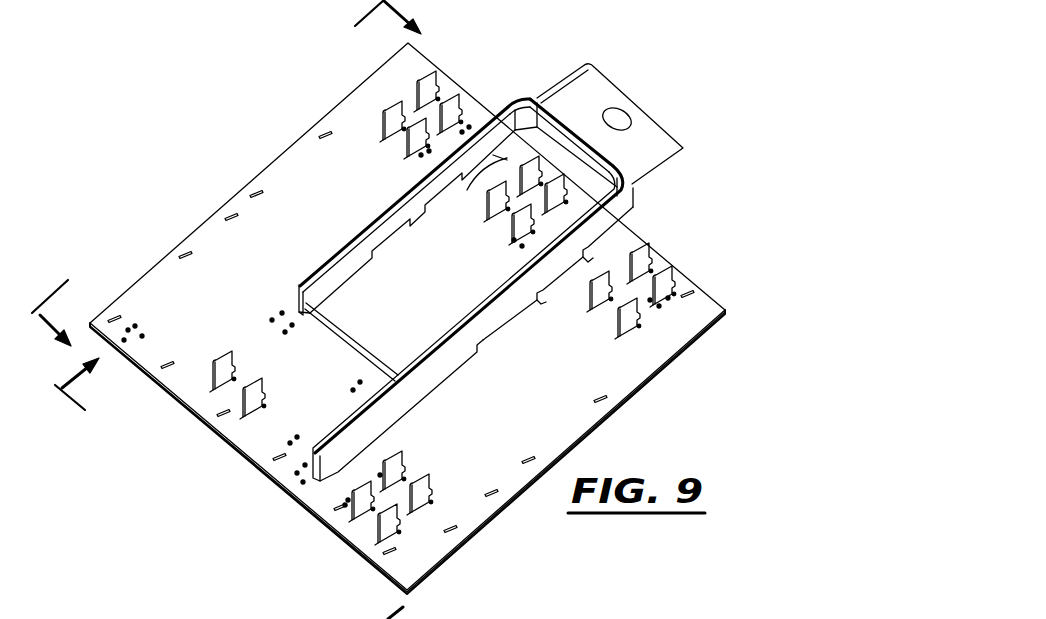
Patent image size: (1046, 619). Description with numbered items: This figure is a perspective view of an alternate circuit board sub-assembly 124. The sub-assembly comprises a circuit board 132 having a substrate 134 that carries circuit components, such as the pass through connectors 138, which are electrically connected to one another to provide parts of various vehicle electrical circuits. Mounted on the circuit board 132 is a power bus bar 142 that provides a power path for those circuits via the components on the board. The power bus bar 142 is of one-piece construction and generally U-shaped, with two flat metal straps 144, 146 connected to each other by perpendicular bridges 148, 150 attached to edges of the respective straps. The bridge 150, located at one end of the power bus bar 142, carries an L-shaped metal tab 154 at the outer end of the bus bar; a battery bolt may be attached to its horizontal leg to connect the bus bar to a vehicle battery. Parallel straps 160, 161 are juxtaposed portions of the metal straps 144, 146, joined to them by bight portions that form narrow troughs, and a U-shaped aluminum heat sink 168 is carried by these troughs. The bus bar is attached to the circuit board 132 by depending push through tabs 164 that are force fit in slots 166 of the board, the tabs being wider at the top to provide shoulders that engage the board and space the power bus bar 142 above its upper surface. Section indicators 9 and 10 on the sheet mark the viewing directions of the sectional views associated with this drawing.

The circuit board sub-assembly 124 is at (573, 315).
The circuit board 132 is at (469, 318).
The substrate 134 is at (722, 318).
The pass through connectors 138 is at (672, 277).
The power bus bar 142 is at (624, 116).
The flat metal strap 144 is at (497, 320).
The flat metal strap 146 is at (310, 275).
The bridge 148 is at (378, 354).
The bridge 150 is at (500, 157).
The L-shaped metal tab 154 is at (598, 90).
The parallel strap 160 is at (440, 347).
The parallel strap 161 is at (406, 224).
The push through tabs 164 is at (545, 275).
The slots 166 is at (544, 302).
The U-shaped aluminum heat sink 168 is at (527, 110).
The section line 9 is at (235, 182).
The section line 10 is at (211, 488).